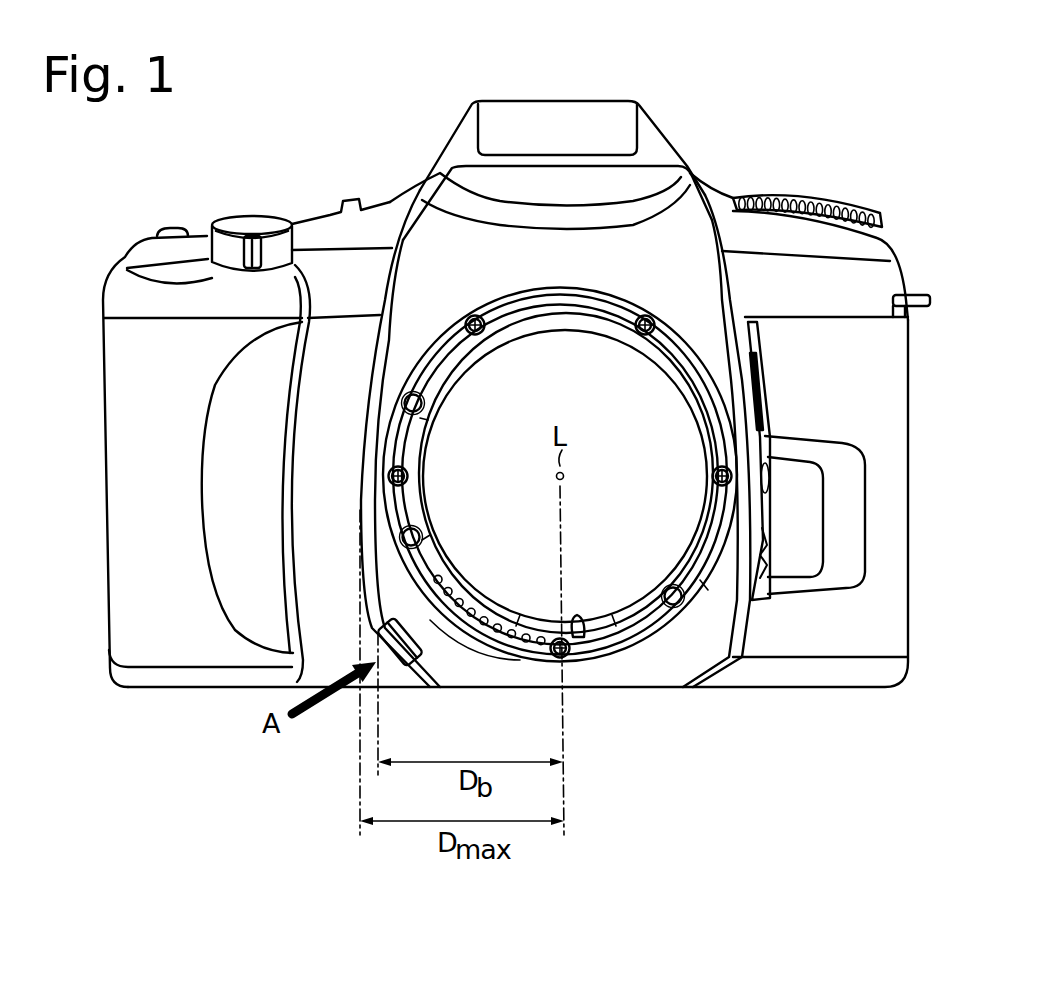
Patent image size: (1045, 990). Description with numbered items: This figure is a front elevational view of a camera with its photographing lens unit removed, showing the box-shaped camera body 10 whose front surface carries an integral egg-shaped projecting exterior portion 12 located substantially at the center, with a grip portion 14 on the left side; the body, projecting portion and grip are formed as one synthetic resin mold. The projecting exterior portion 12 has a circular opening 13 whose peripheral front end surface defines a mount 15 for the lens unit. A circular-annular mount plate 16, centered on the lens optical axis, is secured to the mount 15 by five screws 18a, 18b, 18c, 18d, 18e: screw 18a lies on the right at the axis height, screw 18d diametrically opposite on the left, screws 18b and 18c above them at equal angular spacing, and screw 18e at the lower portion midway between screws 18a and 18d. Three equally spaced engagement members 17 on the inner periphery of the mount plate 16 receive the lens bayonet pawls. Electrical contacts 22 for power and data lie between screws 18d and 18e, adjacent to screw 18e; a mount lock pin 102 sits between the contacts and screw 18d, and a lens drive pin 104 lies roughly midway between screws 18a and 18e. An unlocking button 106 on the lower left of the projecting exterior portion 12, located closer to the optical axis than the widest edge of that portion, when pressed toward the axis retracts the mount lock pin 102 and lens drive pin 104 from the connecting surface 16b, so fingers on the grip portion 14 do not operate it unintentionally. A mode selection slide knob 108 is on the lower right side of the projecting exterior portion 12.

The camera body 10 is at (797, 140).
The projecting exterior portion 12 is at (440, 225).
The circular opening 13 is at (579, 620).
The grip portion 14 is at (112, 490).
The mount 15 is at (496, 672).
The mount plate 16 is at (657, 633).
The connecting surface 16b is at (561, 300).
The engagement members 17 is at (570, 334).
The screw 18a is at (712, 478).
The screw 18b is at (648, 315).
The screw 18c is at (470, 315).
The screw 18d is at (408, 478).
The screw 18e is at (556, 662).
The electrical contacts 22 is at (522, 628).
The mount lock pin 102 is at (422, 537).
The lens drive pin 104 is at (672, 587).
The unlocking button 106 is at (385, 678).
The mode selection slide knob 108 is at (772, 567).